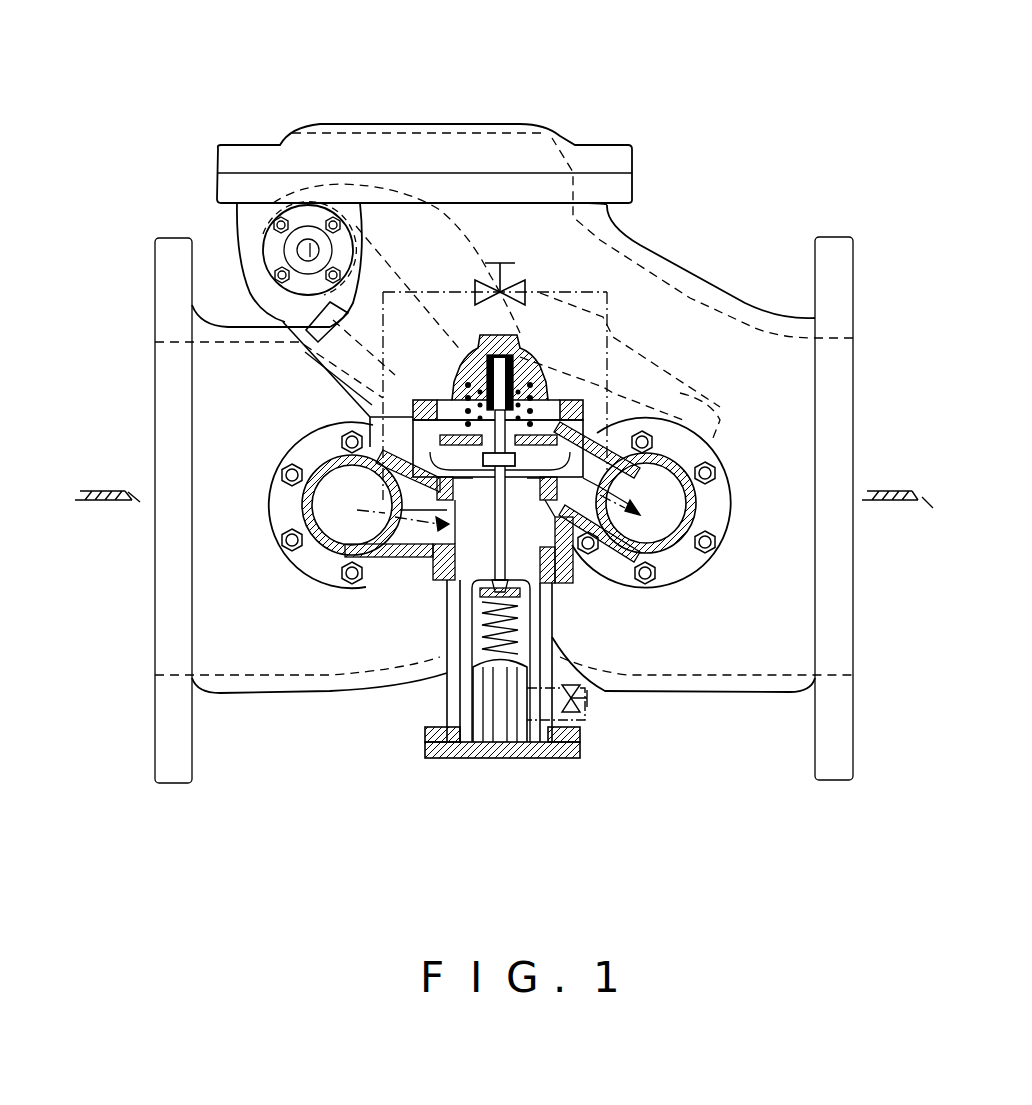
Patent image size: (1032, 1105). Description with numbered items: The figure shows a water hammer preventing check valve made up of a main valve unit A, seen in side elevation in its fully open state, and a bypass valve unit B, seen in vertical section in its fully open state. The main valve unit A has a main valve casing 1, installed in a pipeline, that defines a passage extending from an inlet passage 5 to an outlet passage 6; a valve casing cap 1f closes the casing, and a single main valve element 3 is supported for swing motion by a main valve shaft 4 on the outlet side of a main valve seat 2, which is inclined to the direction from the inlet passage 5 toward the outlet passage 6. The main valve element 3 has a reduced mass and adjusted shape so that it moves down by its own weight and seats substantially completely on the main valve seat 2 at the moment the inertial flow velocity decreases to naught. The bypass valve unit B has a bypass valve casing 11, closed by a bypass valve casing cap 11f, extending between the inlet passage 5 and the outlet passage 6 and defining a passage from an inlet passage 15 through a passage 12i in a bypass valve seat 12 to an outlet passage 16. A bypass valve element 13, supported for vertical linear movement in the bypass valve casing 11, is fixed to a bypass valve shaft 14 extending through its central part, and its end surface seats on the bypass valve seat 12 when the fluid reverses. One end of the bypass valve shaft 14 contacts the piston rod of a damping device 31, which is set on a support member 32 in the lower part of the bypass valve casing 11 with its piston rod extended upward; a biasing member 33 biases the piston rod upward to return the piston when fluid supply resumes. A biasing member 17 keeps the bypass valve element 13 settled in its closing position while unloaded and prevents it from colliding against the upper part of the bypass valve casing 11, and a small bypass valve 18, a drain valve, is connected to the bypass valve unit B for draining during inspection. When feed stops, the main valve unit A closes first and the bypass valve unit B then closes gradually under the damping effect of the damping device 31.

The main valve casing 1 is at (730, 293).
The valve casing cap 1f is at (595, 160).
The main valve seat 2 is at (417, 403).
The main valve element 3 is at (683, 407).
The main valve shaft 4 is at (303, 247).
The inlet passage 5 is at (242, 547).
The outlet passage 6 is at (778, 538).
The bypass valve casing 11 is at (370, 420).
The bypass valve casing cap 11f is at (387, 493).
The bypass valve seat 12 is at (455, 495).
The passage 12i is at (475, 493).
The bypass valve element 13 is at (470, 345).
The bypass valve shaft 14 is at (560, 573).
The inlet passage 15 is at (395, 540).
The outlet passage 16 is at (660, 553).
The biasing member 17 is at (543, 383).
The bypass valve 18 is at (500, 255).
The damping device 31 is at (503, 703).
The support member 32 is at (457, 760).
The biasing member 33 is at (597, 683).
The main valve unit A is at (678, 243).
The bypass valve unit B is at (598, 402).